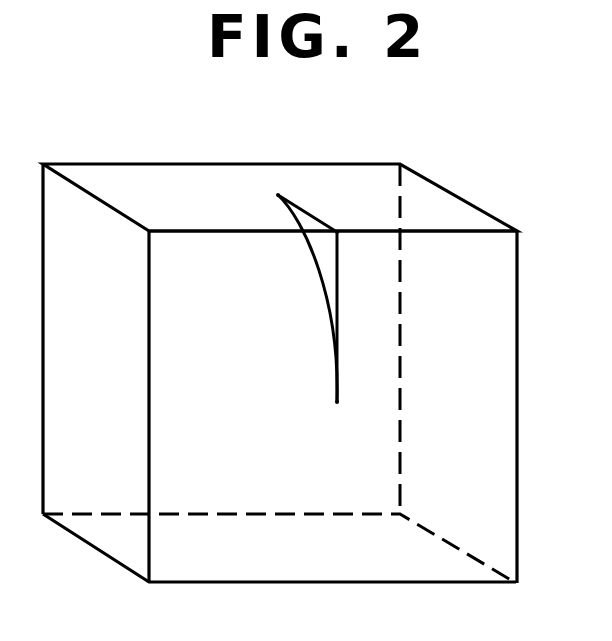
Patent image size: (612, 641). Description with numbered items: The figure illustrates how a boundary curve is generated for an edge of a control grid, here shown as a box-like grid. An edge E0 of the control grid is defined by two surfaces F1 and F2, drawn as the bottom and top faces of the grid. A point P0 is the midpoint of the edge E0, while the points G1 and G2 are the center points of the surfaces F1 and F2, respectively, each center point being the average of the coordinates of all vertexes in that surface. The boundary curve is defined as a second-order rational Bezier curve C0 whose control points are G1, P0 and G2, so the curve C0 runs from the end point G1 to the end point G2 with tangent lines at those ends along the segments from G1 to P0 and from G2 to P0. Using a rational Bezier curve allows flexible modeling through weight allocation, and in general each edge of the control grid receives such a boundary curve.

The surface F1 is at (279, 548).
The surface F2 is at (280, 197).
The edge E0 is at (455, 233).
The center point G1 is at (342, 418).
The center point G2 is at (259, 193).
The midpoint P0 is at (349, 220).
The boundary curve C0 is at (307, 298).